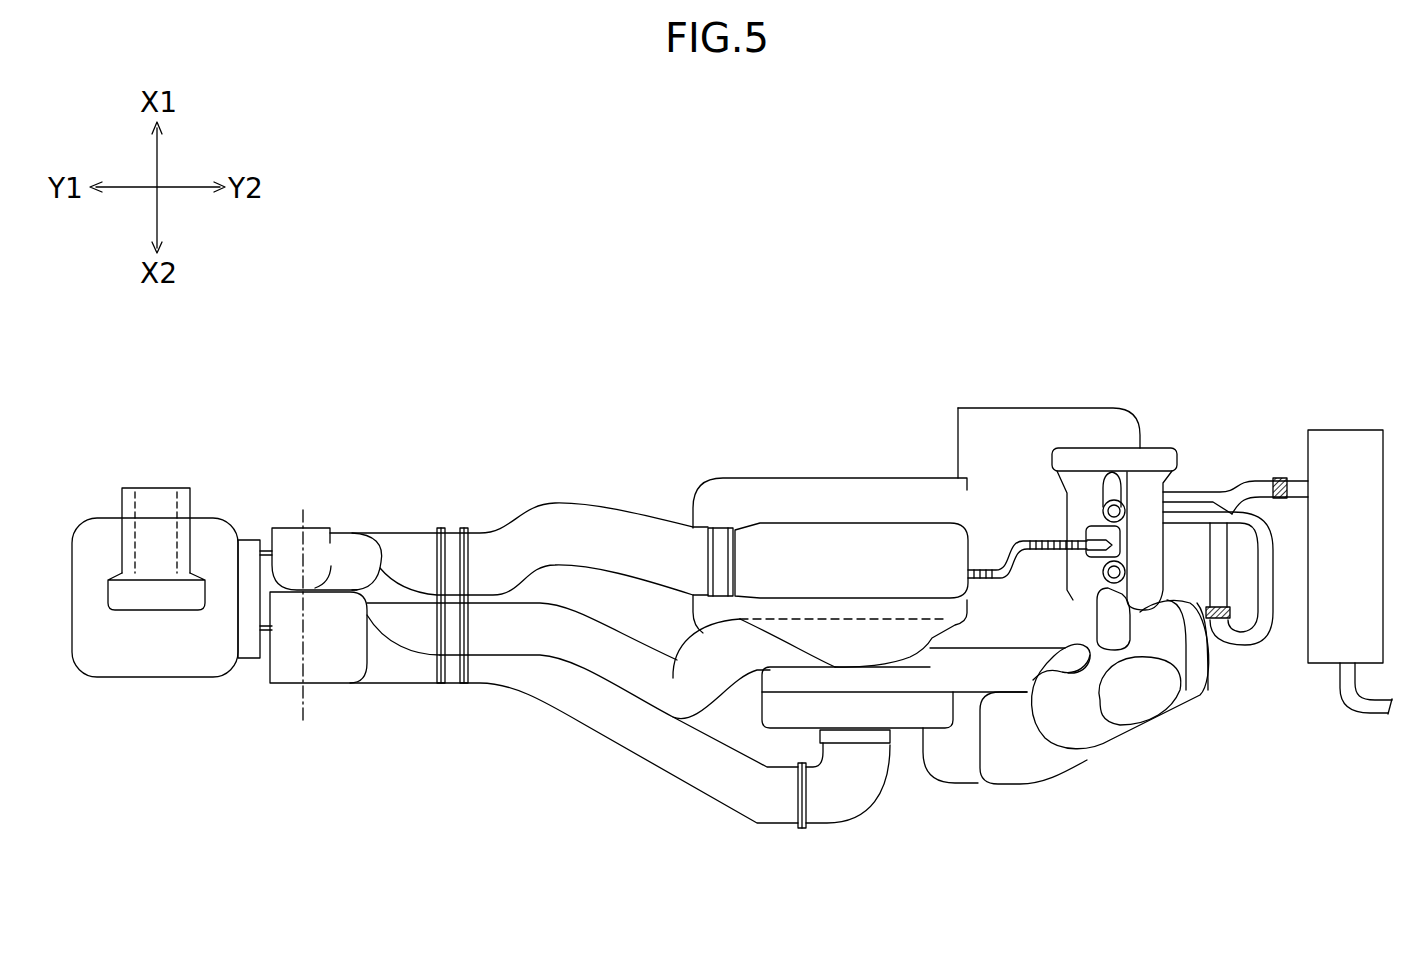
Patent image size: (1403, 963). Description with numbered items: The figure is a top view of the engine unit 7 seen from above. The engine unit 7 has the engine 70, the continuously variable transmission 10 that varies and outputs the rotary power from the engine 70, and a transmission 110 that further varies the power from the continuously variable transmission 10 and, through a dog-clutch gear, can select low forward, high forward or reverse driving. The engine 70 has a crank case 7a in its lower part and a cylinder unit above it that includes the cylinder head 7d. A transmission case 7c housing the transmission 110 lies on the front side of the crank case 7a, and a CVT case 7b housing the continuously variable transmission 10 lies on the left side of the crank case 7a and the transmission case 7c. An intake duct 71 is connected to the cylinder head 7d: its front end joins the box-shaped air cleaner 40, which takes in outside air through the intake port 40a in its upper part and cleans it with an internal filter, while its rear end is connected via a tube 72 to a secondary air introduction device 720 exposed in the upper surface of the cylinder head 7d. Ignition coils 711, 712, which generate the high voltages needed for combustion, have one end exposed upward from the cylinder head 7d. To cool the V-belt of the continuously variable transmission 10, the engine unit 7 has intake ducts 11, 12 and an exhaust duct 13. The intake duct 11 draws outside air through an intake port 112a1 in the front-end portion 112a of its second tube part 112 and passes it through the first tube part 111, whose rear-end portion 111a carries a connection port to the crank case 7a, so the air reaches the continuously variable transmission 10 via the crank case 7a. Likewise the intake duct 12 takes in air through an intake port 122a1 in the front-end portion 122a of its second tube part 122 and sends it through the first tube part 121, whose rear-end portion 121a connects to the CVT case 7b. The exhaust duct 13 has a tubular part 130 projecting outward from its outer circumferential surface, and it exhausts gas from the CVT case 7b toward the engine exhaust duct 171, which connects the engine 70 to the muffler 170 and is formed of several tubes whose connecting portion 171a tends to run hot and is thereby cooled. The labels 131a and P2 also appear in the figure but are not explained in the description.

The engine unit 7 is at (958, 305).
The crank case 7a is at (972, 430).
The CVT case 7b is at (993, 660).
The transmission case 7c is at (856, 497).
The cylinder head 7d is at (1148, 448).
The continuously variable transmission 10 is at (1013, 791).
The intake duct 11 is at (605, 617).
The intake duct 12 is at (595, 735).
The exhaust duct 13 is at (1206, 712).
The air cleaner 40 is at (128, 680).
The intake port 40a is at (162, 488).
The engine 70 is at (1032, 405).
The intake duct 71 is at (563, 503).
The tube 72 is at (1002, 567).
The transmission 110 is at (795, 477).
The first tube part 111 is at (527, 657).
The rear-end portion 111a is at (718, 528).
The second tube part 112 is at (414, 658).
The front-end portion 112a is at (353, 553).
The intake port 112a1 is at (287, 527).
The first tube part 121 is at (682, 787).
The rear-end portion 121a is at (848, 752).
The second tube part 122 is at (393, 681).
The front-end portion 122a is at (318, 672).
The intake port 122a1 is at (268, 668).
The tubular part 130 is at (1100, 602).
The outlet neck 131a is at (1208, 656).
The muffler 170 is at (1345, 430).
The engine exhaust duct 171 is at (1258, 481).
The connecting portion 171a is at (1234, 626).
The ignition coil 711 is at (1103, 576).
The ignition coil 712 is at (1102, 507).
The secondary air introduction device 720 is at (1086, 537).
The reference plane P2 is at (302, 599).